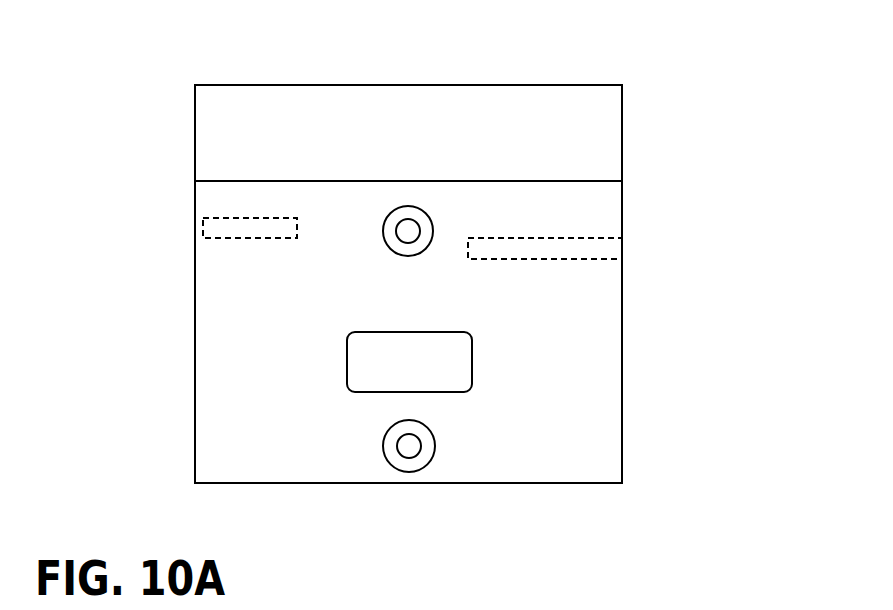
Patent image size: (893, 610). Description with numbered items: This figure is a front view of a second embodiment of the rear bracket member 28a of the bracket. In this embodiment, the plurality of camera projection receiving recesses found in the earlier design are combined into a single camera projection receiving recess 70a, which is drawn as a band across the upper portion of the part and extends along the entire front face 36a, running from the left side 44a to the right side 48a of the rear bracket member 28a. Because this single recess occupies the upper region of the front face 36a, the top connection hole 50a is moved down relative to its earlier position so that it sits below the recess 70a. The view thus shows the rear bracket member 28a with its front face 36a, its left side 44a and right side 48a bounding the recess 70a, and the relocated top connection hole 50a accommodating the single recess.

The rear bracket member 28a is at (168, 219).
The front face 36a is at (583, 394).
The left side 44a is at (195, 342).
The right side 48a is at (622, 316).
The top connection hole 50a is at (418, 206).
The camera projection receiving recess 70a is at (570, 130).